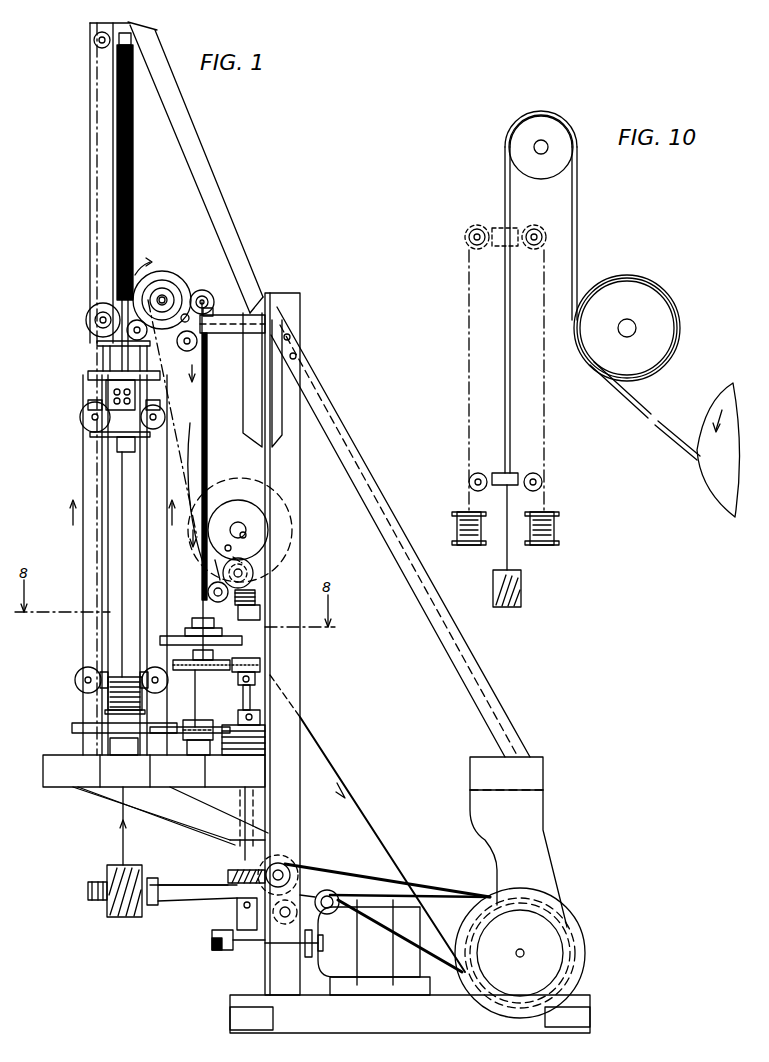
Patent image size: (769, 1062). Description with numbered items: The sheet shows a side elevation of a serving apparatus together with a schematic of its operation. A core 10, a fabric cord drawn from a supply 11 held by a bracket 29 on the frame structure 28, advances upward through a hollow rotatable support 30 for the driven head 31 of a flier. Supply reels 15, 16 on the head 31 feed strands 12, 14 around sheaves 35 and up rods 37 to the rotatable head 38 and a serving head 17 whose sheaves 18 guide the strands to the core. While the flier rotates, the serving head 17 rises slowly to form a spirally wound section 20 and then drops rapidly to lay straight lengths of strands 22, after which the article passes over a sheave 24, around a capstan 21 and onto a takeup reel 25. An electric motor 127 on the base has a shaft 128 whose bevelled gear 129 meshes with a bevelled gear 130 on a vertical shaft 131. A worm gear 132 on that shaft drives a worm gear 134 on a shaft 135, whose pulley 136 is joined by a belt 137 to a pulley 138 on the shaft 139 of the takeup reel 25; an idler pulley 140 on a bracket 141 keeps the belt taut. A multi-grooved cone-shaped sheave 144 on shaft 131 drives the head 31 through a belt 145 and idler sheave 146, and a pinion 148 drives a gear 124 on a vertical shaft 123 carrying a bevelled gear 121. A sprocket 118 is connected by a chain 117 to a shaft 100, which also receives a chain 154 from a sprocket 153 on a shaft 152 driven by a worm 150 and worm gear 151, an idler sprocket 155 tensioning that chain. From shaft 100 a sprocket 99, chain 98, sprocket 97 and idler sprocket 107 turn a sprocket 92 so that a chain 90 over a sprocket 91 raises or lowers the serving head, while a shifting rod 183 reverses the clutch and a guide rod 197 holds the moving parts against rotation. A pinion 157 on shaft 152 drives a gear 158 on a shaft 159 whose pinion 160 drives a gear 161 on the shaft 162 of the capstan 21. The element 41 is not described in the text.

In FIG. 1, the core 10 is at (124, 480).
In FIG. 10, the core 10 is at (508, 565).
In FIG. 1, the supply 11 is at (112, 915).
In FIG. 10, the supply 11 is at (520, 593).
In FIG. 1, the strand 12 is at (175, 431).
In FIG. 10, the strand 12 is at (548, 503).
In FIG. 1, the strand 14 is at (83, 489).
In FIG. 10, the strand 14 is at (468, 498).
In FIG. 10, the supply reel 15 is at (560, 528).
In FIG. 1, the supply reel 16 is at (113, 708).
In FIG. 10, the supply reel 16 is at (456, 528).
In FIG. 1, the serving head 17 is at (94, 396).
In FIG. 10, the serving head 17 is at (500, 228).
In FIG. 1, the sheaves 18 is at (82, 425).
In FIG. 10, the sheaves 18 is at (466, 240).
In FIG. 10, the spirally wound section 20 is at (513, 125).
In FIG. 1, the capstan 21 is at (242, 482).
In FIG. 10, the capstan 21 is at (632, 290).
In FIG. 1, the straight lengths of strands 22 is at (385, 848).
In FIG. 10, the straight lengths of strands 22 is at (582, 240).
In FIG. 1, the sheave 24 is at (165, 272).
In FIG. 10, the sheave 24 is at (552, 172).
In FIG. 1, the takeup reel 25 is at (584, 955).
In FIG. 10, the takeup reel 25 is at (718, 500).
In FIG. 1, the frame structure 28 is at (89, 104).
In FIG. 1, the bracket 29 is at (175, 898).
In FIG. 1, the hollow rotatable support 30 is at (109, 745).
In FIG. 1, the driven head 31 is at (75, 730).
In FIG. 1, the sheaves 35 is at (78, 686).
In FIG. 1, the rods 37 is at (148, 558).
In FIG. 1, the rotatable head 38 is at (100, 344).
In FIG. 1, the bracket 41 is at (92, 378).
In FIG. 1, the chain 90 is at (93, 173).
In FIG. 1, the sprocket 91 is at (94, 40).
In FIG. 1, the sprocket 92 is at (95, 322).
In FIG. 1, the sprocket 97 is at (90, 316).
In FIG. 1, the chain 98 is at (158, 300).
In FIG. 1, the sprocket 99 is at (156, 272).
In FIG. 1, the shaft 100 is at (168, 292).
In FIG. 1, the sprocket 107 is at (147, 330).
In FIG. 1, the chain 117 is at (203, 292).
In FIG. 1, the sprocket 118 is at (205, 298).
In FIG. 1, the bevelled gear 121 is at (212, 310).
In FIG. 1, the vertical shaft 123 is at (207, 380).
In FIG. 1, the gear 124 is at (203, 671).
In FIG. 1, the electric motor 127 is at (372, 915).
In FIG. 1, the shaft 128 is at (235, 952).
In FIG. 1, the bevelled gear 129 is at (215, 952).
In FIG. 1, the bevelled gear 130 is at (238, 920).
In FIG. 1, the vertical shaft 131 is at (244, 800).
In FIG. 1, the worm gear 132 is at (230, 876).
In FIG. 1, the worm gear 134 is at (292, 850).
In FIG. 1, the shaft 135 is at (308, 866).
In FIG. 1, the pulley 136 is at (300, 858).
In FIG. 1, the belt 137 is at (436, 890).
In FIG. 1, the pulley 138 is at (472, 930).
In FIG. 1, the shaft 139 is at (523, 950).
In FIG. 1, the idler pulley 140 is at (335, 892).
In FIG. 1, the bracket 141 is at (295, 922).
In FIG. 1, the multi-grooved cone-shaped sheave 144 is at (262, 745).
In FIG. 1, the belt 145 is at (188, 726).
In FIG. 1, the idler sheave 146 is at (205, 724).
In FIG. 1, the pinion 148 is at (260, 666).
In FIG. 1, the worm 150 is at (258, 596).
In FIG. 1, the worm gear 151 is at (208, 592).
In FIG. 1, the shaft 152 is at (203, 615).
In FIG. 1, the sprocket 153 is at (213, 578).
In FIG. 1, the chain 154 is at (180, 348).
In FIG. 1, the idler sprocket 155 is at (207, 333).
In FIG. 1, the pinion 157 is at (229, 539).
In FIG. 1, the gear 158 is at (255, 533).
In FIG. 1, the shaft 159 is at (248, 552).
In FIG. 1, the pinion 160 is at (252, 570).
In FIG. 1, the gear 161 is at (238, 522).
In FIG. 1, the shaft 162 is at (239, 523).
In FIG. 1, the shifting rod 183 is at (124, 190).
In FIG. 1, the guide rod 197 is at (129, 240).